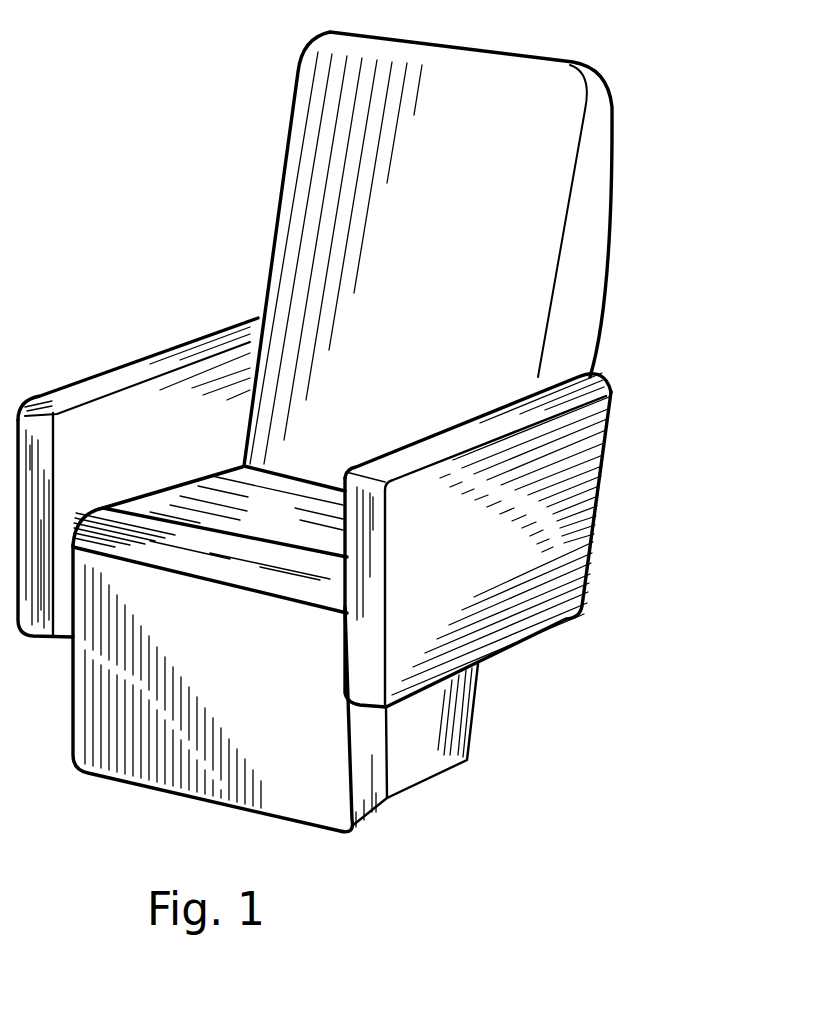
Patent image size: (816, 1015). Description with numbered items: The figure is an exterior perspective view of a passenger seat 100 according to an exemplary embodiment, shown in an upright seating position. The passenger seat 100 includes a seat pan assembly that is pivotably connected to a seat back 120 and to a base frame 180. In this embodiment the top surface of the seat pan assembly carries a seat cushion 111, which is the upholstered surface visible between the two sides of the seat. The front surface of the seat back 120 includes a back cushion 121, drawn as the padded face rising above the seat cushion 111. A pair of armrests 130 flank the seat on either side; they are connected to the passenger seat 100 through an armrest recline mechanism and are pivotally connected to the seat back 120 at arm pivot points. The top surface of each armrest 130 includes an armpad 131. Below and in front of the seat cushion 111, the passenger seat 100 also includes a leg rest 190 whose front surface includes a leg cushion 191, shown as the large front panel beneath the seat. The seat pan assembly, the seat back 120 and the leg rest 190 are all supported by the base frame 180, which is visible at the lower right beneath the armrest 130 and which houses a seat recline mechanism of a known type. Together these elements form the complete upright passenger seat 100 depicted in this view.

The passenger seat 100 is at (154, 151).
The seat cushion 111 is at (291, 522).
The seat back 120 is at (587, 285).
The back cushion 121 is at (424, 254).
The armrests 130 is at (169, 447).
The armpad 131 is at (132, 375).
The base frame 180 is at (470, 732).
The leg rest 190 is at (387, 808).
The leg cushion 191 is at (241, 704).